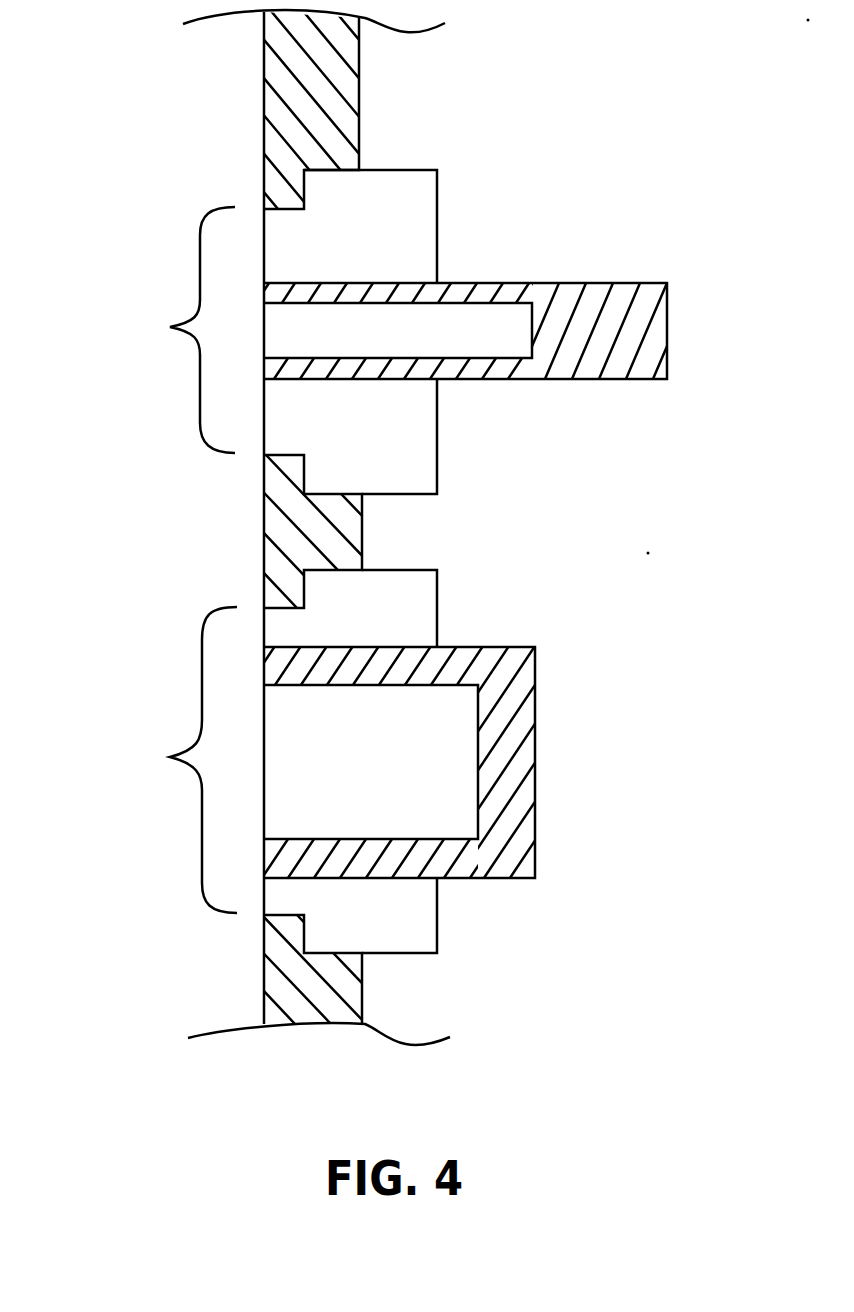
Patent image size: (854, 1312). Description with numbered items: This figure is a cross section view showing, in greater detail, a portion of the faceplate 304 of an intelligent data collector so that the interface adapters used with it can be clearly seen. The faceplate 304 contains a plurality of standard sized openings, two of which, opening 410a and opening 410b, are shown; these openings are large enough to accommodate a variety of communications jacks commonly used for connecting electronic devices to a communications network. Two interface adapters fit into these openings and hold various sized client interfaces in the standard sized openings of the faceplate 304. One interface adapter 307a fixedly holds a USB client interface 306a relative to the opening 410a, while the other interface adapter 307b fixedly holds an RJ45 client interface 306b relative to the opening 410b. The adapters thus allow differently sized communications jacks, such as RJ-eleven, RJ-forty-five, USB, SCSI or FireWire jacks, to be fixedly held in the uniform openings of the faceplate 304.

The faceplate 304 is at (298, 101).
The USB client interface 306a is at (603, 347).
The RJ45 client interface 306b is at (508, 742).
The interface adapter 307a is at (410, 435).
The interface adapter 307b is at (412, 603).
The opening 410a is at (171, 330).
The opening 410b is at (172, 760).